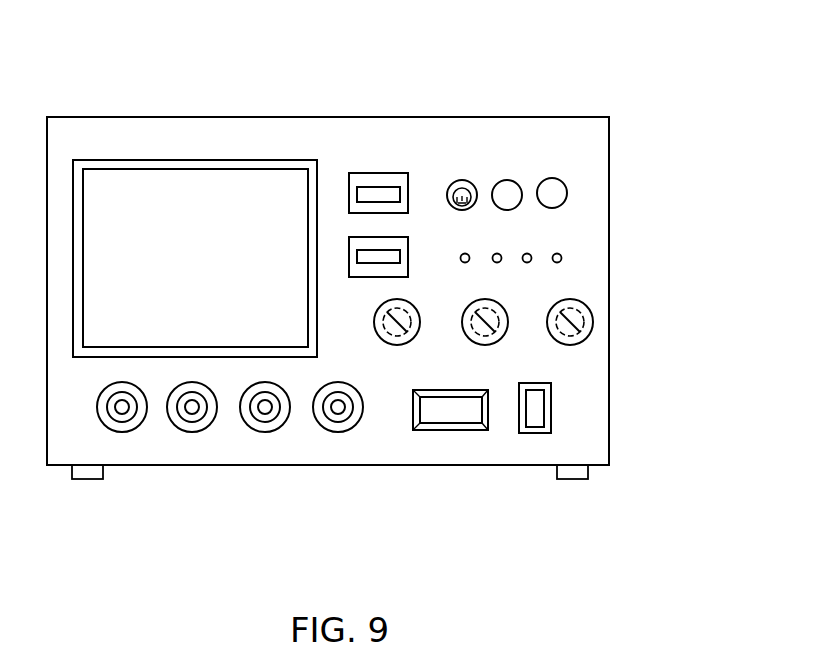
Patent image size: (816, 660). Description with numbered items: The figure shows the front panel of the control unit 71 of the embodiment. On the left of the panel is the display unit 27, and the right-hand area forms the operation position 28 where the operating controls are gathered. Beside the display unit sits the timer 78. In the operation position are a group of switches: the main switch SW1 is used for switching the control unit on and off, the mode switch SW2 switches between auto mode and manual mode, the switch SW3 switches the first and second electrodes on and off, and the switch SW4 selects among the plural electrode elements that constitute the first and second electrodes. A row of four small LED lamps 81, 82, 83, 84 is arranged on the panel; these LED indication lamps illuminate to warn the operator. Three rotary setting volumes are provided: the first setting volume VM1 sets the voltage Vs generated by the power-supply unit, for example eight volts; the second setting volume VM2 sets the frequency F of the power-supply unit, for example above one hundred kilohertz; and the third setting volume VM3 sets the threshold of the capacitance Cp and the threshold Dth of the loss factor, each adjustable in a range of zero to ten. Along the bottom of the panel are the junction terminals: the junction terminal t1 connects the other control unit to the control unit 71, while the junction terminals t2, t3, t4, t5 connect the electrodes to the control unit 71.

The control unit 71 is at (416, 112).
The operation position 28 is at (553, 150).
The display unit 27 is at (217, 180).
The timer 78 is at (375, 193).
The main switch SW1 is at (535, 408).
The mode switch SW2 is at (462, 180).
The electrode on/off switch SW3 is at (508, 180).
The electrode element selecting switch SW4 is at (566, 185).
The LED lamp 81 is at (469, 254).
The LED lamp 82 is at (501, 254).
The LED lamp 83 is at (531, 254).
The LED lamp 84 is at (561, 254).
The first setting volume VM1 is at (395, 344).
The second setting volume VM2 is at (500, 340).
The third setting volume VM3 is at (593, 321).
The junction terminal t1 is at (450, 417).
The junction terminal t2 is at (122, 415).
The junction terminal t3 is at (192, 415).
The junction terminal t4 is at (265, 415).
The junction terminal t5 is at (338, 415).